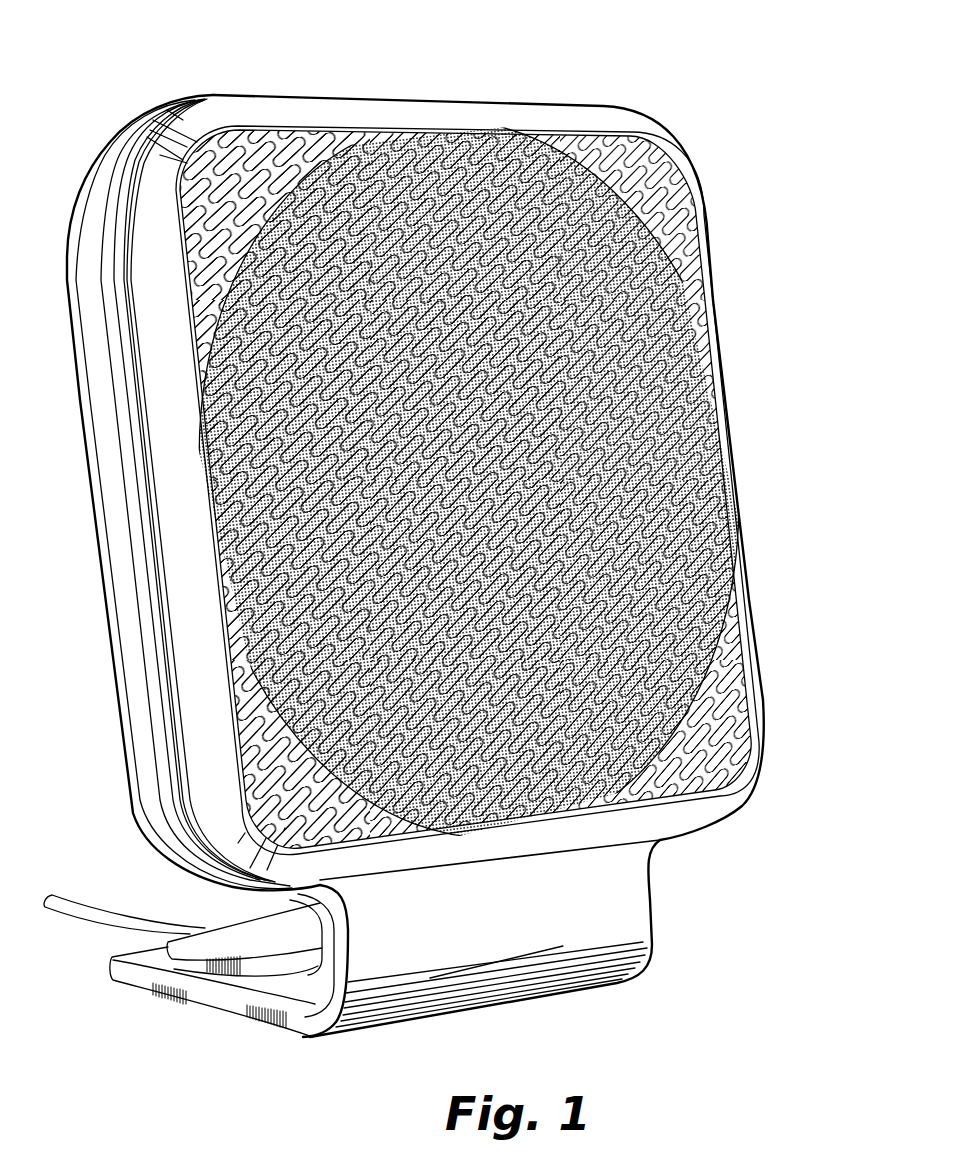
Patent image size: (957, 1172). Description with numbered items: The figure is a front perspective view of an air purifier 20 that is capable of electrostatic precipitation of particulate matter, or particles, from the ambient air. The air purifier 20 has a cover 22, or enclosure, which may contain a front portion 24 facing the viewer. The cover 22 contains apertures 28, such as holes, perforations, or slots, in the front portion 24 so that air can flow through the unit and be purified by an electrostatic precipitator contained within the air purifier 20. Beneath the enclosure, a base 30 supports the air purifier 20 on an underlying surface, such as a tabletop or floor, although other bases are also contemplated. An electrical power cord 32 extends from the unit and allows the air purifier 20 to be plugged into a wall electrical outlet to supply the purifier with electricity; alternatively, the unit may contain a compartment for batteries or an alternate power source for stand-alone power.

The air purifier 20 is at (688, 70).
The cover 22 is at (598, 107).
The front portion 24 is at (670, 190).
The apertures 28 is at (697, 547).
The base 30 is at (212, 1000).
The electrical power cord 32 is at (110, 908).